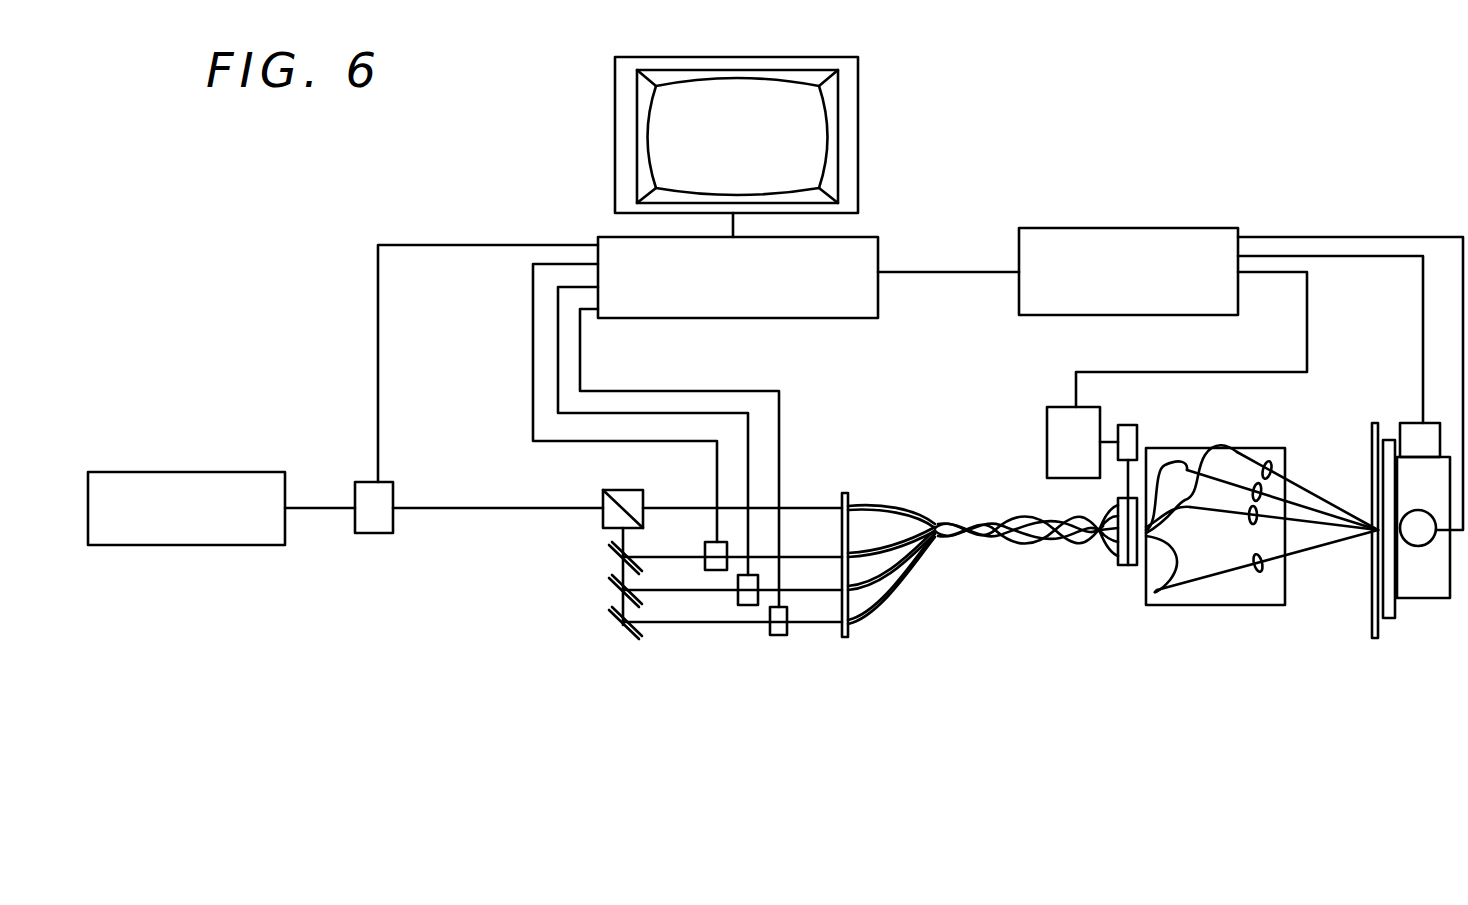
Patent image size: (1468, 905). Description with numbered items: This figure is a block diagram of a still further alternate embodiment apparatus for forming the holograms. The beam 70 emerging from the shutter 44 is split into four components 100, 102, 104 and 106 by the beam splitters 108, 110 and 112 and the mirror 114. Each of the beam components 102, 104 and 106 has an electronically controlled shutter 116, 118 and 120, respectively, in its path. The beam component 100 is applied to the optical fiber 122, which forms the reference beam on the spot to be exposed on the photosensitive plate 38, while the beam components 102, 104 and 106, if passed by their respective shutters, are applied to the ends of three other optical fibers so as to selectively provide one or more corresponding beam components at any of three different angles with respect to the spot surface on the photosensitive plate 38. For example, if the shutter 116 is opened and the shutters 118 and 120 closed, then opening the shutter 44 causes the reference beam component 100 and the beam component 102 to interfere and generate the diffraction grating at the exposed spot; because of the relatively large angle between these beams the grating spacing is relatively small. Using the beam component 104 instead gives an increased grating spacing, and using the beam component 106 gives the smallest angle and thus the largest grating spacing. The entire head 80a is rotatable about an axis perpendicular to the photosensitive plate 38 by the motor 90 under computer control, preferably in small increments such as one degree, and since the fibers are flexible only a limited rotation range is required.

The photosensitive plate 38 is at (1377, 608).
The shutter 44 is at (365, 525).
The beam 70 is at (418, 507).
The head 80a is at (1147, 607).
The motor 90 is at (1047, 435).
The beam component 100 is at (797, 507).
The beam component 102 is at (660, 557).
The beam component 104 is at (663, 590).
The beam component 106 is at (687, 622).
The beam splitter 108 is at (623, 490).
The beam splitter 110 is at (615, 558).
The beam splitter 112 is at (613, 592).
The mirror 114 is at (613, 625).
The electronically controlled shutter 116 is at (718, 567).
The electronically controlled shutter 118 is at (747, 607).
The electronically controlled shutter 120 is at (787, 633).
The optical fiber 122 is at (887, 507).